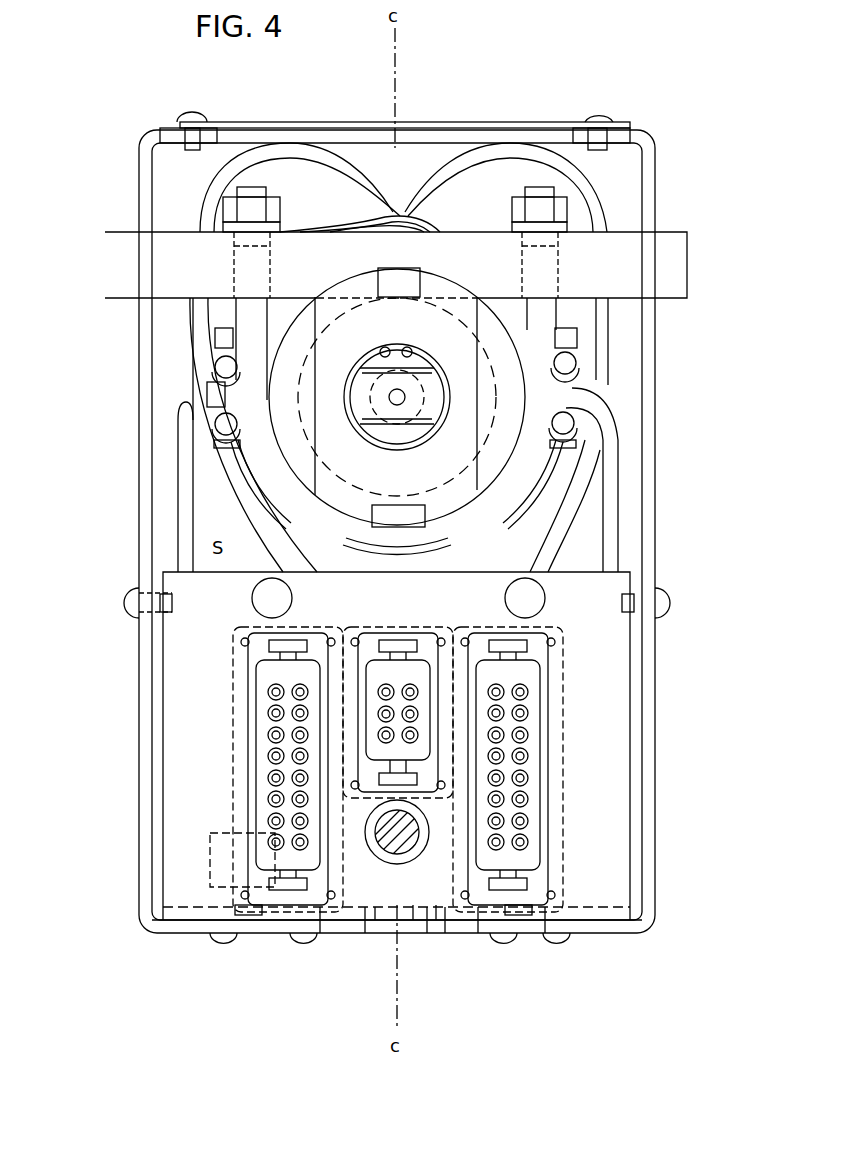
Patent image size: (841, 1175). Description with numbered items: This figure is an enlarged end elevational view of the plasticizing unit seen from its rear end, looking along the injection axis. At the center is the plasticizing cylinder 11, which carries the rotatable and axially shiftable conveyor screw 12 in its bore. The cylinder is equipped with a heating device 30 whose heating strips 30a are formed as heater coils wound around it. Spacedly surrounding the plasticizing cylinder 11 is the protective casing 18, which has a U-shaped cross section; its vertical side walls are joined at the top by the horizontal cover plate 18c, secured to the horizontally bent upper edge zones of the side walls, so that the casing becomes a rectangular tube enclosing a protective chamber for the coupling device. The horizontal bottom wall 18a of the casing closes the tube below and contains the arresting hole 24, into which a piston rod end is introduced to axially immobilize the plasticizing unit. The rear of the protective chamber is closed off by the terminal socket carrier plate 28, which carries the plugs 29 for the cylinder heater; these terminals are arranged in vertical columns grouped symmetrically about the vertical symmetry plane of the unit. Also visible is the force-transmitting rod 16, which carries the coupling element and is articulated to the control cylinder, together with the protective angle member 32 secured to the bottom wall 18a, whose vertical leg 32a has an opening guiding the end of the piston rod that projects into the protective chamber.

The plasticizing cylinder 11 is at (278, 333).
The conveyor screw 12 is at (410, 390).
The force-transmitting rod 16 is at (377, 852).
The protective casing 18 is at (658, 478).
The horizontal bottom wall 18a is at (590, 930).
The horizontal cover plate 18c is at (522, 127).
The arresting hole 24 is at (374, 920).
The terminal socket carrier plate 28 is at (211, 738).
The plugs 29 is at (523, 756).
The heating device 30 is at (580, 360).
The heating strips 30a is at (610, 440).
The protective angle member 32 is at (436, 905).
The vertical leg 32a is at (413, 907).